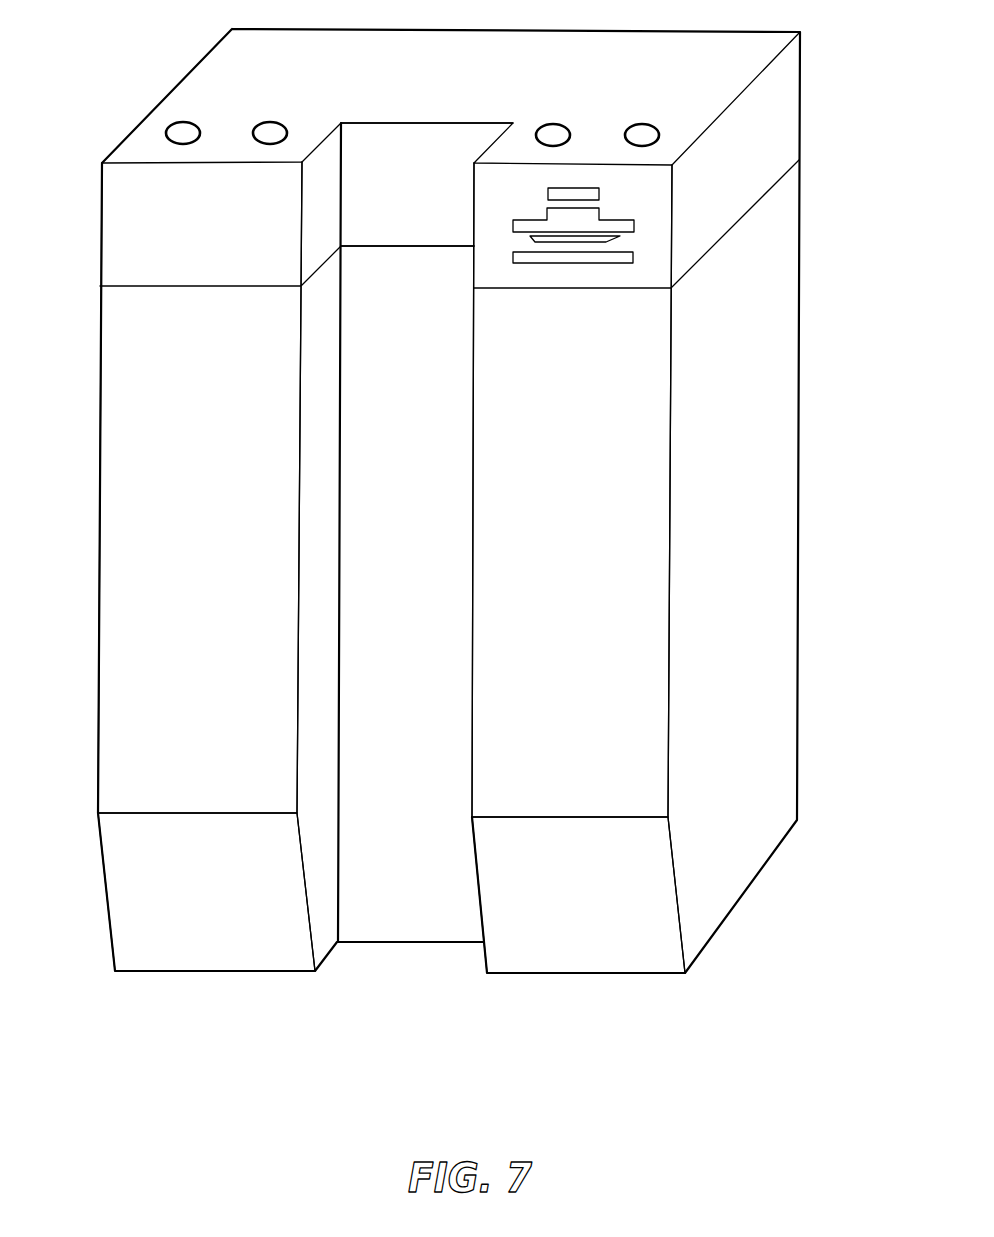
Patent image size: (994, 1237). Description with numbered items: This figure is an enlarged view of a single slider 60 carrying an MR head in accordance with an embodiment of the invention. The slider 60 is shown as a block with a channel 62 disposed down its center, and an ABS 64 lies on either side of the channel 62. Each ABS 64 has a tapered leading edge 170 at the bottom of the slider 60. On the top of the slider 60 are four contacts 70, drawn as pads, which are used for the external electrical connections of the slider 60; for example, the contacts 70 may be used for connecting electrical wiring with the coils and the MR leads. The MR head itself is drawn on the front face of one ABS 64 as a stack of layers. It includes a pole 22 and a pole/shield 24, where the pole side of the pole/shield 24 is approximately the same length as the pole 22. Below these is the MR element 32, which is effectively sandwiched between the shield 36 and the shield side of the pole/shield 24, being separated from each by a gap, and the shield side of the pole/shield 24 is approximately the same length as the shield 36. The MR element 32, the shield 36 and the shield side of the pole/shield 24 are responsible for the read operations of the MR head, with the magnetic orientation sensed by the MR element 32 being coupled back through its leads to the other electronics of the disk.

The slider 60 is at (862, 424).
The channel 62 is at (401, 937).
The ABSs 64 is at (118, 640).
The contacts 70 is at (270, 122).
The pole 22 is at (599, 192).
The pole/shield 24 is at (599, 214).
The MR element 32 is at (620, 238).
The shield 36 is at (633, 258).
The tapered leading edge 170 is at (184, 963).